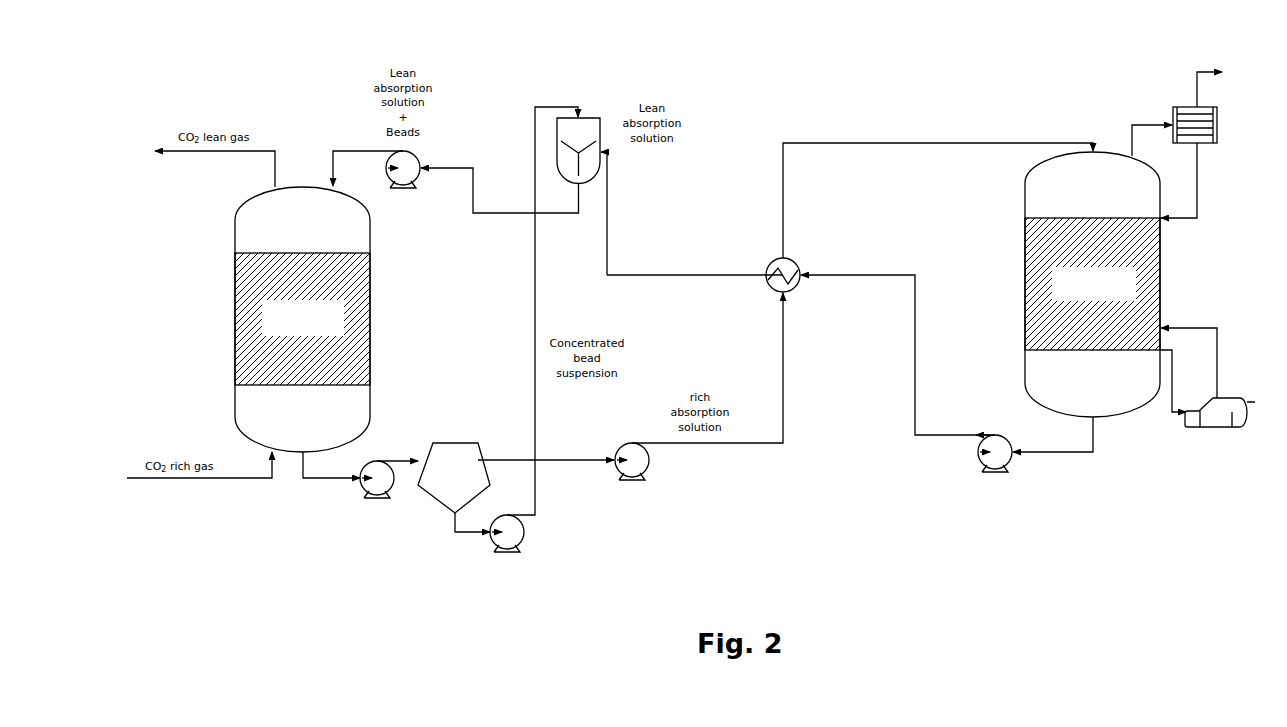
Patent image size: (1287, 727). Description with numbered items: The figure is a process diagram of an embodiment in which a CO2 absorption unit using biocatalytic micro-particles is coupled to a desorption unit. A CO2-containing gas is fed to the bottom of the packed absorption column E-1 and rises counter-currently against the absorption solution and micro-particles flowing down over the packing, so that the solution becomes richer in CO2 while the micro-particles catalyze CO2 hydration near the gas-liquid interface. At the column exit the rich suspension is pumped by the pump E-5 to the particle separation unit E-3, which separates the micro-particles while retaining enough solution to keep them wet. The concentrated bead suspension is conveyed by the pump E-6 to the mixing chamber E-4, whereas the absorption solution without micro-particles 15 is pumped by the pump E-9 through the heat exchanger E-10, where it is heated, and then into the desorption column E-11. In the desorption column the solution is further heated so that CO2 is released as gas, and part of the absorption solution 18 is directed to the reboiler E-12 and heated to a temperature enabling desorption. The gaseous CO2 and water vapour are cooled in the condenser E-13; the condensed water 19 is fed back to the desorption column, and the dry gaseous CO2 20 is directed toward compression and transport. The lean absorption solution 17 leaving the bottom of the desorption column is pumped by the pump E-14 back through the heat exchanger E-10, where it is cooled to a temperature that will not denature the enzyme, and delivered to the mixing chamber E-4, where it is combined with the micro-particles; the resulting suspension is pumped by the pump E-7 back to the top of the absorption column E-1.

The absorption solution without micro-particles 15 is at (546, 450).
The lean absorption solution 17 is at (1053, 434).
The part of the absorption solution 18 is at (1181, 381).
The condensed water fed back to the desorption unit 19 is at (1201, 180).
The dry gaseous CO2 20 is at (1226, 74).
The absorption column E-1 is at (321, 319).
The particle separation unit E-3 is at (454, 478).
The mixing chamber E-4 is at (578, 160).
The pump E-5 is at (377, 490).
The pump E-6 is at (507, 548).
The pump E-7 is at (403, 186).
The pump E-9 is at (632, 473).
The heat exchanger E-10 is at (799, 269).
The desorption column E-11 is at (1116, 284).
The reboiler E-12 is at (1220, 430).
The condenser E-13 is at (1212, 125).
The pump E-14 is at (995, 471).